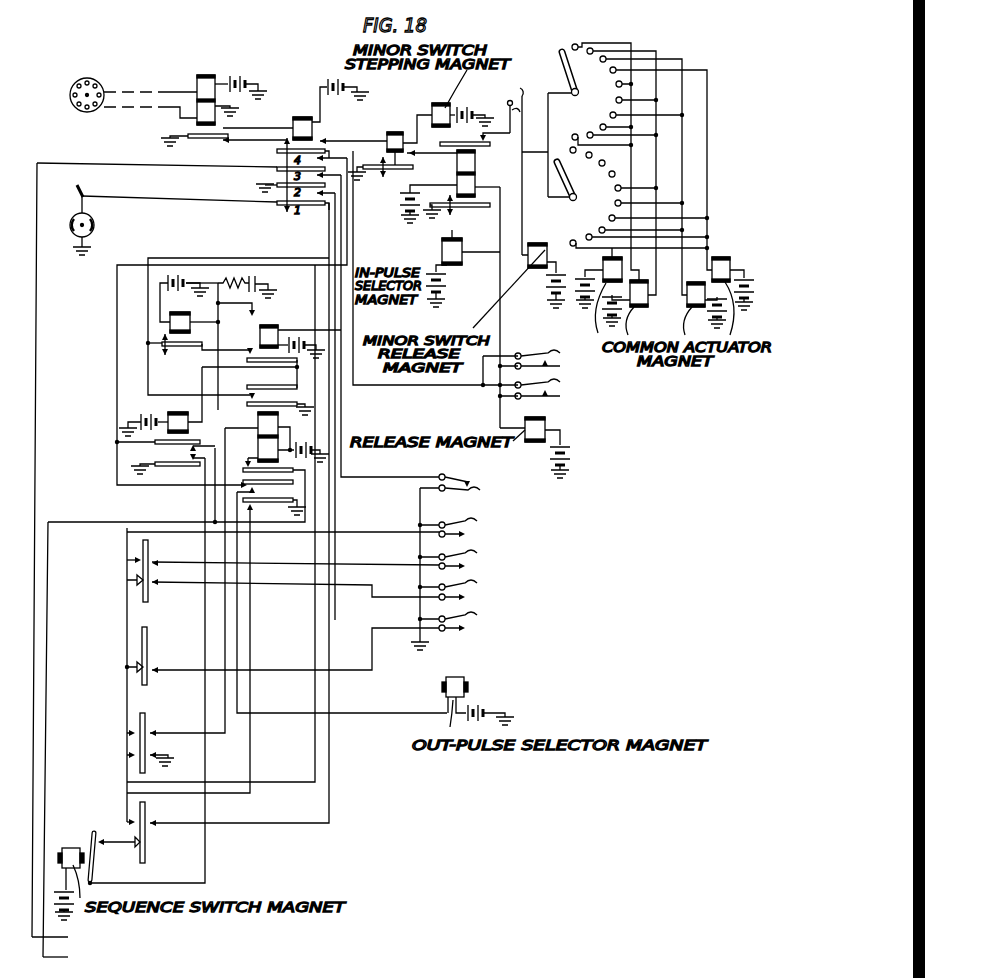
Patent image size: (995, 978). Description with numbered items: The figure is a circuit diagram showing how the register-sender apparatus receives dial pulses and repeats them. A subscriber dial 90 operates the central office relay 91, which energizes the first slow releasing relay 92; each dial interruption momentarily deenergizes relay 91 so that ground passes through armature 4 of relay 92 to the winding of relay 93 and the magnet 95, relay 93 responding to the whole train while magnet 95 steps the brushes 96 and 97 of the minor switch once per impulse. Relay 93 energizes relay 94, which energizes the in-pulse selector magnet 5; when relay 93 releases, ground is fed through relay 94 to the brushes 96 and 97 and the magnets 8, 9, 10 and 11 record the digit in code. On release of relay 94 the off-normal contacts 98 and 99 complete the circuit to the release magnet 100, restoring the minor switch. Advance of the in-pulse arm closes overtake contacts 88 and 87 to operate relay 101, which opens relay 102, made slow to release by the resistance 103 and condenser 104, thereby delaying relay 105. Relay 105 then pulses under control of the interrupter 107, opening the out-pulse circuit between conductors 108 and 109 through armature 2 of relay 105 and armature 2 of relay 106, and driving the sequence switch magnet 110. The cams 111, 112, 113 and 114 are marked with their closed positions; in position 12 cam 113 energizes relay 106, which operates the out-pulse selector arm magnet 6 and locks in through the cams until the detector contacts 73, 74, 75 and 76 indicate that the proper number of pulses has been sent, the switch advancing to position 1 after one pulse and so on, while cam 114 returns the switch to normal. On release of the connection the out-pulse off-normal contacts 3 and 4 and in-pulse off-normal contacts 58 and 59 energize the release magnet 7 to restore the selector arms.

The dial 90 is at (93, 84).
The central office relay 91 is at (203, 75).
The first slow releasing relay 92 is at (302, 117).
The relay 93 is at (395, 132).
The relay 94 is at (476, 163).
The magnet 95 is at (437, 104).
The brush 96 is at (566, 70).
The brush 97 is at (568, 176).
The off-normal contact 98 is at (507, 110).
The off-normal contact 99 is at (522, 112).
The release magnet 100 is at (547, 248).
The relay 101 is at (260, 333).
The relay 102 is at (188, 326).
The resistance 103 is at (231, 277).
The condenser 104 is at (259, 277).
The relay 105 is at (178, 412).
The relay 106 is at (258, 432).
The interrupter 107 is at (95, 225).
The conductor 108 is at (63, 938).
The conductor 109 is at (69, 958).
The sequence switch magnet 110 is at (75, 840).
The cam 111 is at (150, 598).
The cam 112 is at (150, 680).
The cam 113 is at (160, 766).
The cam 114 is at (145, 860).
The in-pulse selector magnet 5 is at (442, 249).
The out-pulse selector arm magnet 6 is at (460, 678).
The release magnet 7 is at (545, 425).
The magnet 8 is at (603, 262).
The magnet 9 is at (639, 280).
The magnet 10 is at (696, 282).
The magnet 11 is at (730, 262).
The in-pulse off-normal contact 58 is at (526, 355).
The in-pulse off-normal contact 59 is at (560, 366).
The out-pulse off-normal contact 3 is at (543, 386).
The out-pulse off-normal contact 4 is at (543, 398).
The detector contact 73 is at (478, 521).
The detector contact 74 is at (478, 553).
The detector contact 75 is at (478, 583).
The detector contact 76 is at (478, 615).
The overtake switch contact 87 is at (455, 480).
The overtake switch contact 88 is at (480, 492).
The sequence switch position 1 is at (263, 509).
The armature 2 is at (263, 489).
The sequence switch position 12 is at (170, 728).